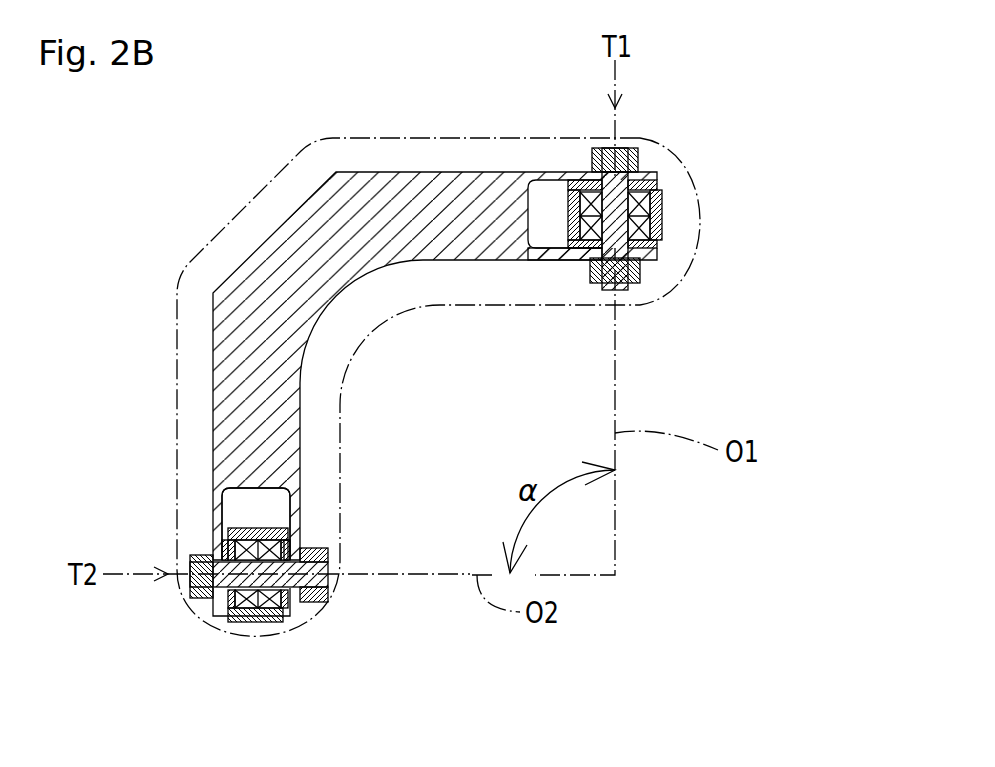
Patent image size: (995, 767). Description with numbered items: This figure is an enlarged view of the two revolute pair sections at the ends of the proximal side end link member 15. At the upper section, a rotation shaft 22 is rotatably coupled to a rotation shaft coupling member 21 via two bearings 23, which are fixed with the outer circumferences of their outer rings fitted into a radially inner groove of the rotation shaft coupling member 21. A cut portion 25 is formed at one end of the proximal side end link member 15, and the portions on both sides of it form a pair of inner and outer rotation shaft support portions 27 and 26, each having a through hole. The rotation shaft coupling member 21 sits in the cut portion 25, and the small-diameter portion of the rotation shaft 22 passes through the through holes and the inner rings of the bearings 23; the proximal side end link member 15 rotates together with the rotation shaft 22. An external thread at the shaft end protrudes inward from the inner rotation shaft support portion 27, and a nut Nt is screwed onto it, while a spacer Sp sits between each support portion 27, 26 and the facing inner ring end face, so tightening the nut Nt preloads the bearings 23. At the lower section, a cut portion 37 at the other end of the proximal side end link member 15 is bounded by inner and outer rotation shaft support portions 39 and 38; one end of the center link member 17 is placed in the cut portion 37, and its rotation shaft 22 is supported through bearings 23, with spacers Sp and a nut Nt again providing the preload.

The proximal side end link member 15 is at (327, 232).
The center link member 17 is at (223, 527).
The rotation shaft coupling member 21 is at (570, 232).
The rotation shaft 22 is at (633, 147).
The bearing 23 is at (580, 222).
The cut portion 25 is at (553, 255).
The outer rotation shaft support portion 26 is at (580, 176).
The inner rotation shaft support portion 27 is at (562, 255).
The cut portion 37 is at (232, 500).
The outer rotation shaft support portion 38 is at (213, 605).
The inner rotation shaft support portion 39 is at (290, 614).
The spacer Sp is at (647, 247).
The nut Nt is at (645, 270).